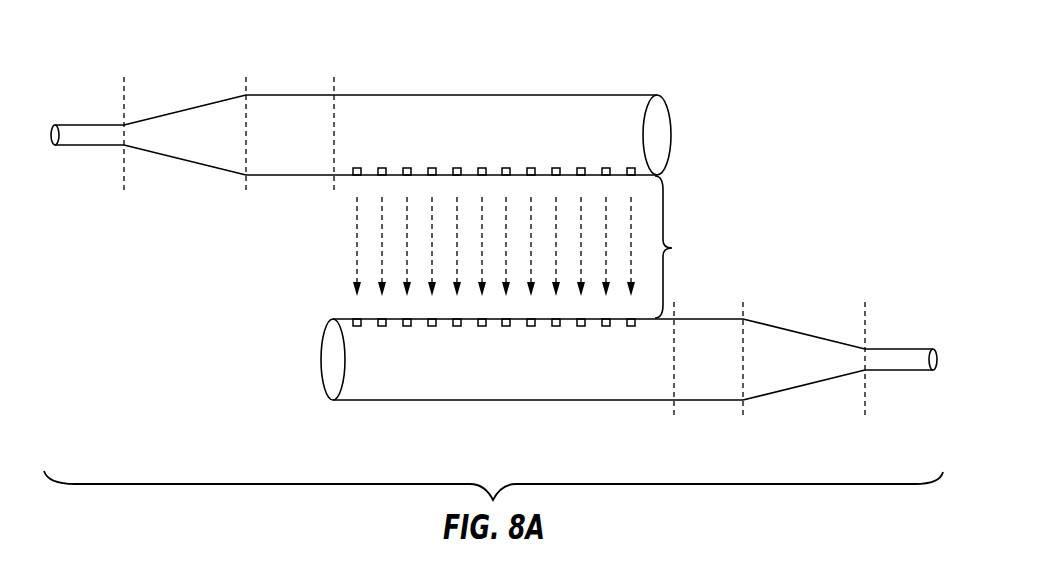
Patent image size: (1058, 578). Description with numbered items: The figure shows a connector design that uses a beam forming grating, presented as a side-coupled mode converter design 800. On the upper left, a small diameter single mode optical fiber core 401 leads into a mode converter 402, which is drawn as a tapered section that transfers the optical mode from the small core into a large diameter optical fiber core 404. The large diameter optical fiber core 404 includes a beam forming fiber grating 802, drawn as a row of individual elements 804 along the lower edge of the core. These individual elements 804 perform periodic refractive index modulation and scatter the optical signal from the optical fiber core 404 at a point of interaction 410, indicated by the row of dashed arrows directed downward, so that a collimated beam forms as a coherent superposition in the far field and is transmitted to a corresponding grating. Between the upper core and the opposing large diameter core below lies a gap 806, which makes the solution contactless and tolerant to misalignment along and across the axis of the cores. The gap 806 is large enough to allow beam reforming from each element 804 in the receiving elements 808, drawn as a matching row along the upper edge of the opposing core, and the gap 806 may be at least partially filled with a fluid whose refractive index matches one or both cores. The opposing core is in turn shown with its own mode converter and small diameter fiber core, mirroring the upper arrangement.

The mode converter design 800 is at (845, 52).
The small diameter single mode optical fiber core 401 is at (83, 146).
The mode converter 402 is at (186, 107).
The large diameter optical fiber core 404 is at (297, 93).
The beam forming fiber grating 802 is at (540, 94).
The individual elements 804 is at (382, 178).
The gap 806 is at (688, 247).
The receiving elements 808 is at (382, 318).
The point of interaction 410 is at (318, 240).